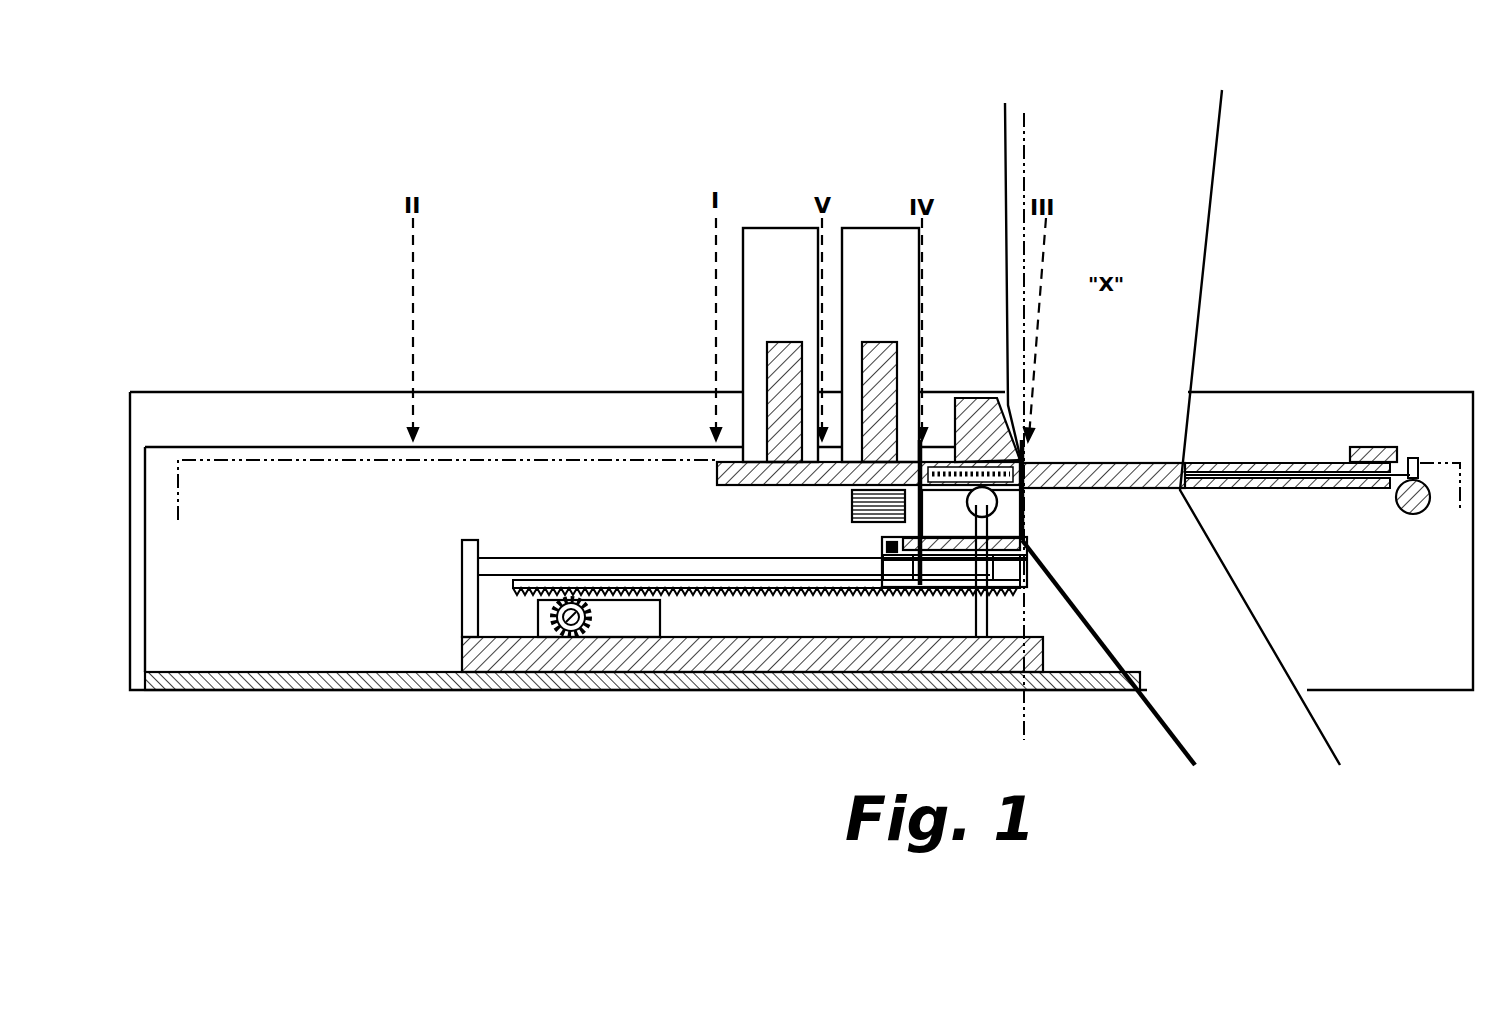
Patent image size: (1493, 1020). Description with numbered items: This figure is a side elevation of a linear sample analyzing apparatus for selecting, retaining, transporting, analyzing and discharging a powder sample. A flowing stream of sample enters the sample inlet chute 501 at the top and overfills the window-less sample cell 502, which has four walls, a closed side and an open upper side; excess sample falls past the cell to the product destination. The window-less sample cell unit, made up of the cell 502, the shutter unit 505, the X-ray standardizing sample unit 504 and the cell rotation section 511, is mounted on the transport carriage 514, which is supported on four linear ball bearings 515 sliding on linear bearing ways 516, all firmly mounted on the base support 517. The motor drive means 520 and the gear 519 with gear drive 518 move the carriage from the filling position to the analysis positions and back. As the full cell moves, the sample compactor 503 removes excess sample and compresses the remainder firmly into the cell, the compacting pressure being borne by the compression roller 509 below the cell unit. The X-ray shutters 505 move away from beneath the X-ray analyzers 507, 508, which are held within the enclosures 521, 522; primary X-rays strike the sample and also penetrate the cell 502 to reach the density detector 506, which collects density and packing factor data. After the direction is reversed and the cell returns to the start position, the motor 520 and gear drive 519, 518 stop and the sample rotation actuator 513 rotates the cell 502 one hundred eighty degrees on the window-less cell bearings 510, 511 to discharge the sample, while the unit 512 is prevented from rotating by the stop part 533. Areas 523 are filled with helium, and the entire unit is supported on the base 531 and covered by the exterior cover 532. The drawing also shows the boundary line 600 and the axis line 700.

The sample inlet chute 501 is at (1158, 228).
The window-less sample cell 502 is at (1120, 486).
The sample compactor 503 is at (977, 400).
The X-ray standardizing sample unit 504 is at (942, 460).
The shutter unit 505 is at (722, 474).
The density detector 506 is at (883, 507).
The X-ray analyzer 507 is at (878, 360).
The X-ray analyzer 508 is at (785, 373).
The compression roller 509 is at (985, 503).
The window-less cell bearing 510 is at (1022, 458).
The cell rotation section 511 is at (1233, 468).
The unit 512 is at (1312, 490).
The sample rotation actuator 513 is at (1410, 515).
The transport carriage 514 is at (893, 547).
The linear ball bearings 515 is at (1005, 567).
The linear bearing ways 516 is at (623, 588).
The base support 517 is at (753, 648).
The gear drive 518 is at (565, 560).
The gear 519 is at (548, 617).
The motor drive means 520 is at (628, 617).
The X-ray analyzer enclosure 521 is at (788, 297).
The X-ray analyzer enclosure 522 is at (884, 262).
The helium-filled areas 523 is at (428, 483).
The base 531 is at (858, 693).
The exterior cover 532 is at (211, 425).
The stop part 533 is at (1362, 442).
The boundary line 600 is at (815, 506).
The axis line 700 is at (1035, 424).